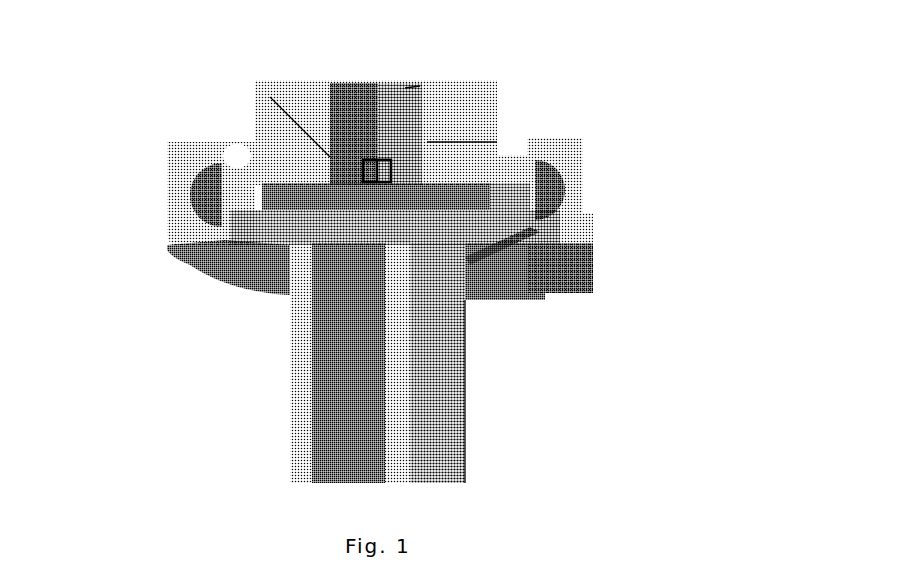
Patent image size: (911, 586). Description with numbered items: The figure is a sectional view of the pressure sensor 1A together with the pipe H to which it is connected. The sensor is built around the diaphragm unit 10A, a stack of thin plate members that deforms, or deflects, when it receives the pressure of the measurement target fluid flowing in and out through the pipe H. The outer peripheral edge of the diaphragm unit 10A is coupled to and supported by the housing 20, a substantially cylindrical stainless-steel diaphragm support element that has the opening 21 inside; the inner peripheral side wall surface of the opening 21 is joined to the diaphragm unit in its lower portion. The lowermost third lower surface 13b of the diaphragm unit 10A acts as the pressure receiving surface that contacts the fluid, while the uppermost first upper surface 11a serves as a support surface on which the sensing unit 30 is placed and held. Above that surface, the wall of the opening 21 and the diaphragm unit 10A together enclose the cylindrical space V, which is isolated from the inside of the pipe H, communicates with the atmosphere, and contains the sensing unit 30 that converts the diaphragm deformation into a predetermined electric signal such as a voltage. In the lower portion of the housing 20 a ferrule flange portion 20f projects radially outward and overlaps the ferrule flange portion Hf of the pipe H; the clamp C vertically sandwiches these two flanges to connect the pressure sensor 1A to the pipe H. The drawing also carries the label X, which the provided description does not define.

The pressure sensor 1A is at (575, 63).
The diaphragm unit 10A is at (325, 307).
The housing 20 is at (429, 100).
The ferrule flange portion 20f is at (255, 155).
The opening 21 is at (340, 83).
The sensing unit 30 is at (384, 88).
The first upper surface 11a is at (392, 160).
The third lower surface 13b is at (530, 298).
The clamp C is at (570, 177).
The pipe H is at (503, 337).
The ferrule flange portion Hf is at (218, 277).
The space V is at (405, 88).
The axis direction X is at (270, 97).